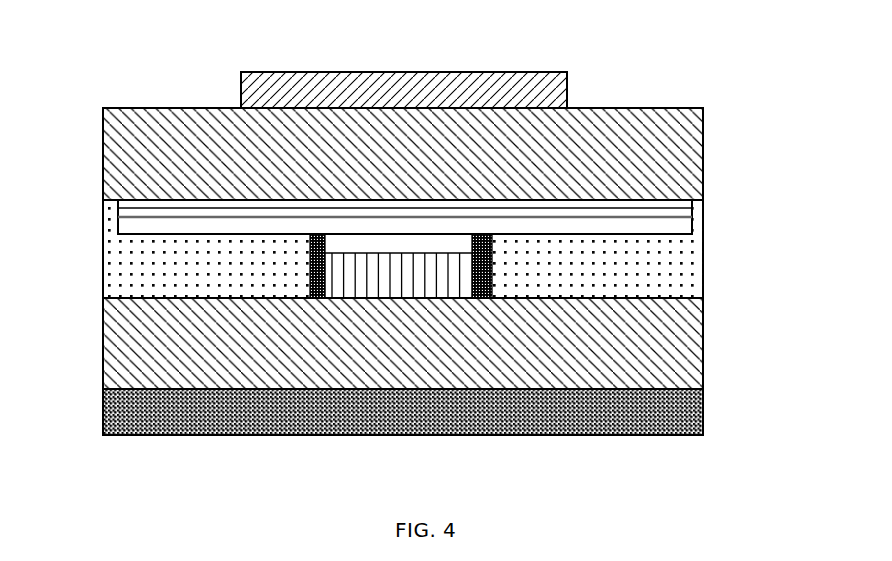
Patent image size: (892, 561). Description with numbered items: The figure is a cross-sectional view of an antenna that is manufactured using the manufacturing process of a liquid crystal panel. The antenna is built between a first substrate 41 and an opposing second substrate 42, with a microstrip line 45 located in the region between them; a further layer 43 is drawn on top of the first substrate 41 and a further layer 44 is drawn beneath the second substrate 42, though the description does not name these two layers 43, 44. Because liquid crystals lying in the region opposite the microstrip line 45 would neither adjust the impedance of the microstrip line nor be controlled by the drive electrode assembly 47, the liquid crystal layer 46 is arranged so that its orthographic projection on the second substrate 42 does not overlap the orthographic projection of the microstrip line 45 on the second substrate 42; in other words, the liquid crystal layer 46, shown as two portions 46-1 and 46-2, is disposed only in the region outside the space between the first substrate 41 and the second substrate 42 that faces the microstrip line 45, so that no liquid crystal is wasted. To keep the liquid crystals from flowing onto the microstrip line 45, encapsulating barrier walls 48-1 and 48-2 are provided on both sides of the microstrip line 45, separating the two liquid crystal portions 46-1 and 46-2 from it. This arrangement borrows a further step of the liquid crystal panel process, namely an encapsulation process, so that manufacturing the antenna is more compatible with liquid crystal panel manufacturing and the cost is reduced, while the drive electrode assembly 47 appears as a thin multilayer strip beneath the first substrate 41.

The first substrate 41 is at (635, 108).
The second substrate 42 is at (703, 356).
The top electrode layer 43 is at (517, 72).
The bottom layer 44 is at (703, 420).
The microstrip line 45 is at (470, 285).
The liquid crystal layer 46 is at (710, 210).
The liquid crystal layer 46-1 is at (118, 268).
The liquid crystal layer 46-2 is at (665, 286).
The drive electrode assembly 47 is at (662, 212).
The encapsulating barrier wall 48-1 is at (320, 300).
The encapsulating barrier wall 48-2 is at (483, 300).